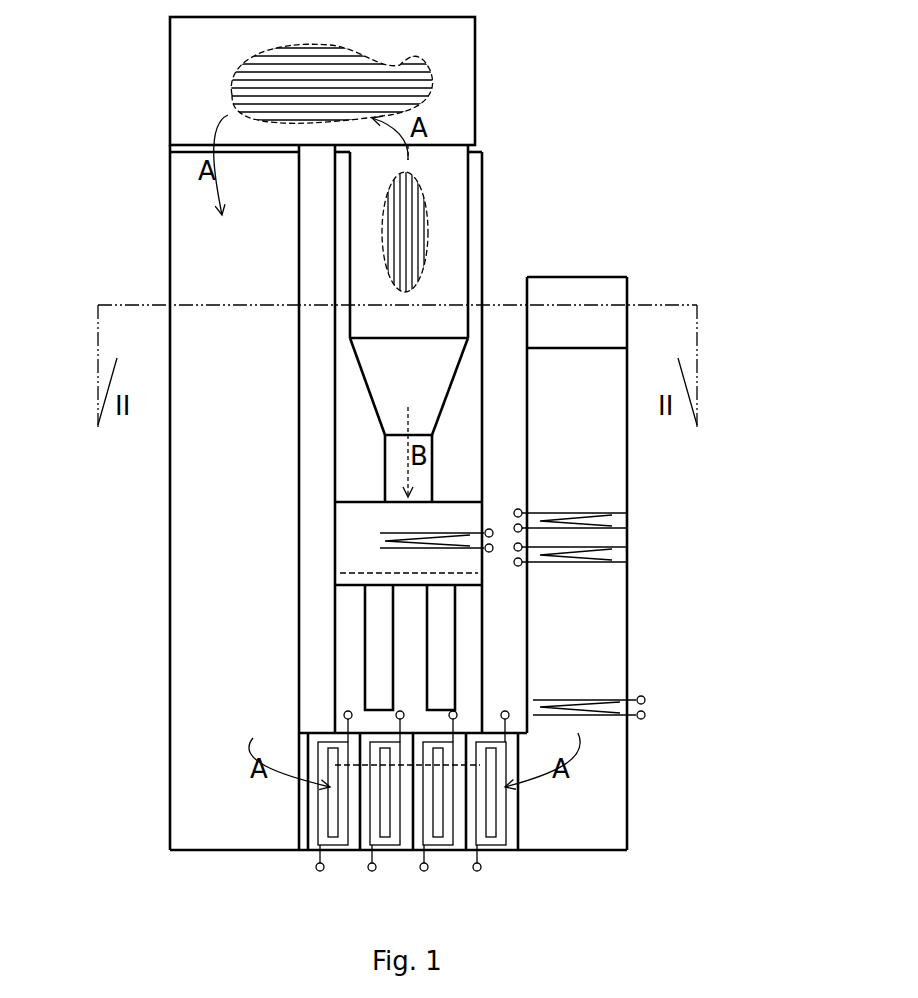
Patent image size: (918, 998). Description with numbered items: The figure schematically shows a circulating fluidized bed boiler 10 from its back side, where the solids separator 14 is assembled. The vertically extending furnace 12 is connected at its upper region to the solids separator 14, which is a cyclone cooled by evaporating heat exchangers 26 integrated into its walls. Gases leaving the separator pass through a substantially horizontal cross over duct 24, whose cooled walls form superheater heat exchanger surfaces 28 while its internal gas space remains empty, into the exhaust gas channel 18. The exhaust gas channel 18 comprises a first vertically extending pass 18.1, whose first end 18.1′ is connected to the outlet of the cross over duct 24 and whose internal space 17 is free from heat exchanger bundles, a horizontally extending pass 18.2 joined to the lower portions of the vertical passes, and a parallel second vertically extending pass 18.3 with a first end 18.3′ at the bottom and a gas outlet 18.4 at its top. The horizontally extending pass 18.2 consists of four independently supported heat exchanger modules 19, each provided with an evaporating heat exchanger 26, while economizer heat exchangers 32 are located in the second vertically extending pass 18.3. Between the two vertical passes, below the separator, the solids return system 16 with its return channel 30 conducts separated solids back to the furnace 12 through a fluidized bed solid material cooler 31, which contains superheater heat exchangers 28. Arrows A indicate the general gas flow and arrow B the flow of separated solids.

The circulating fluidized bed boiler 10 is at (572, 155).
The furnace 12 is at (372, 438).
The solids separator 14 is at (385, 295).
The solids return system 16 is at (458, 485).
The internal space 17 is at (235, 630).
The exhaust gas channel 18 is at (166, 566).
The first vertically extending pass 18.1 is at (243, 381).
The first end of the first vertically extending pass 18.1′ is at (183, 158).
The horizontally extending pass 18.2 is at (408, 860).
The second vertically extending pass 18.3 is at (608, 415).
The first end of the second vertically extending pass 18.3′ is at (617, 823).
The gas outlet 18.4 is at (572, 292).
The heat exchanger module 19 is at (370, 738).
The cross over duct 24 is at (243, 58).
The evaporating heat exchanger 26 is at (412, 215).
The superheater heat exchanger 28 is at (412, 82).
The return channel 30 is at (385, 660).
The fluidized bed solid material cooler 31 is at (378, 569).
The economizer heat exchanger 32 is at (585, 530).